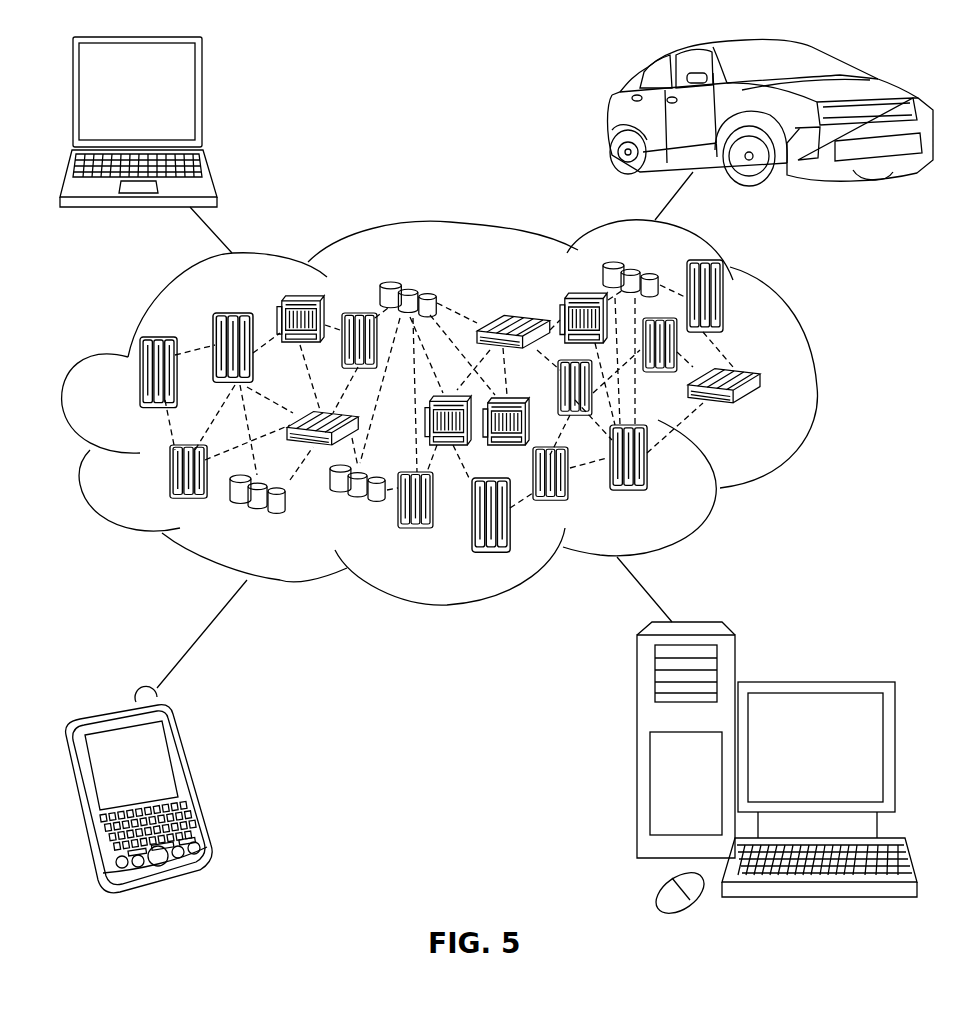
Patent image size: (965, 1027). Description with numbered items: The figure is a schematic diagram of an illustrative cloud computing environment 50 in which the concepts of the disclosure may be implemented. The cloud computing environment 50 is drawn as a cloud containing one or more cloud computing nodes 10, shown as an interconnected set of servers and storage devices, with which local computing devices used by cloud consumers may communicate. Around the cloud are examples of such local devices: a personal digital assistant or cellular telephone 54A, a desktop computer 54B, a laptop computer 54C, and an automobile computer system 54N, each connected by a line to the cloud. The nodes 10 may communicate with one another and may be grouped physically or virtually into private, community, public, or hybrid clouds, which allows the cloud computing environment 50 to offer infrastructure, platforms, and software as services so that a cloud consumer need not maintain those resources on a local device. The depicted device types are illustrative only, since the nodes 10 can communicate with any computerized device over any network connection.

The cloud computing nodes 10 is at (760, 416).
The cloud computing environment 50 is at (816, 387).
The personal digital assistant (PDA) or cellular telephone 54A is at (193, 776).
The desktop computer 54B is at (815, 682).
The laptop computer 54C is at (203, 101).
The automobile computer system 54N is at (608, 118).